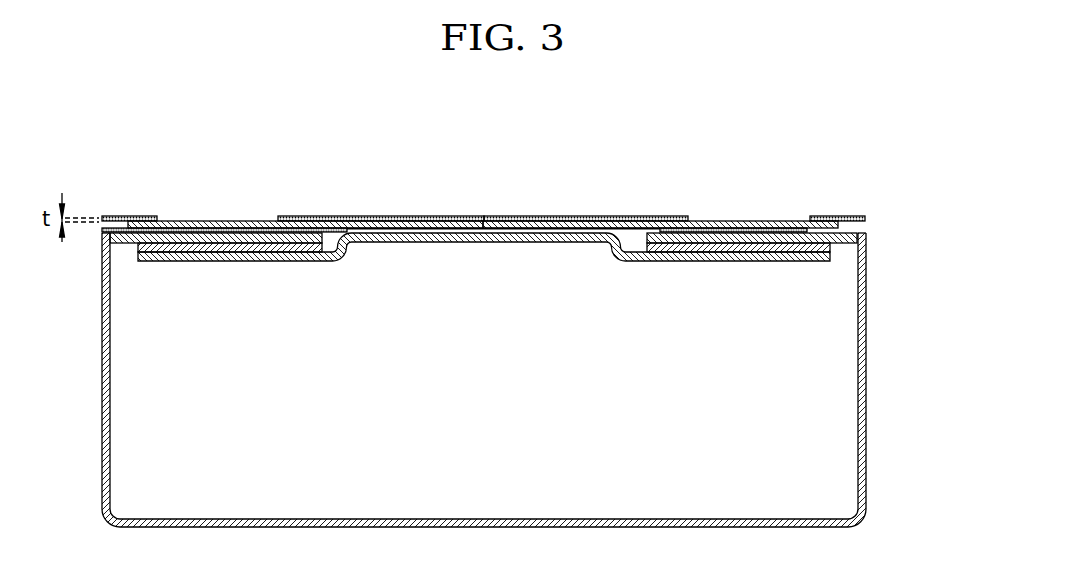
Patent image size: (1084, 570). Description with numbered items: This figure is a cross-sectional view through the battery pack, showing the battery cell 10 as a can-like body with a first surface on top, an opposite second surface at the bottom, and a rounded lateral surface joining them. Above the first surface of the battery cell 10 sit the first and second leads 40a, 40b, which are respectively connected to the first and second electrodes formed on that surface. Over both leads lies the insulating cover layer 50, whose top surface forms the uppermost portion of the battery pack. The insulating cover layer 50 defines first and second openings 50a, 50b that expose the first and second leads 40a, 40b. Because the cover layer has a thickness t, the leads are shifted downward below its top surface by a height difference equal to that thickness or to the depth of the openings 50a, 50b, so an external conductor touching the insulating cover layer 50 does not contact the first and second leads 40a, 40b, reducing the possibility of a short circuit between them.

The battery cell 10 is at (867, 357).
The first lead 40a is at (223, 220).
The second lead 40b is at (767, 220).
The insulating cover layer 50 is at (852, 216).
The first opening 50a is at (272, 220).
The second opening 50b is at (688, 219).